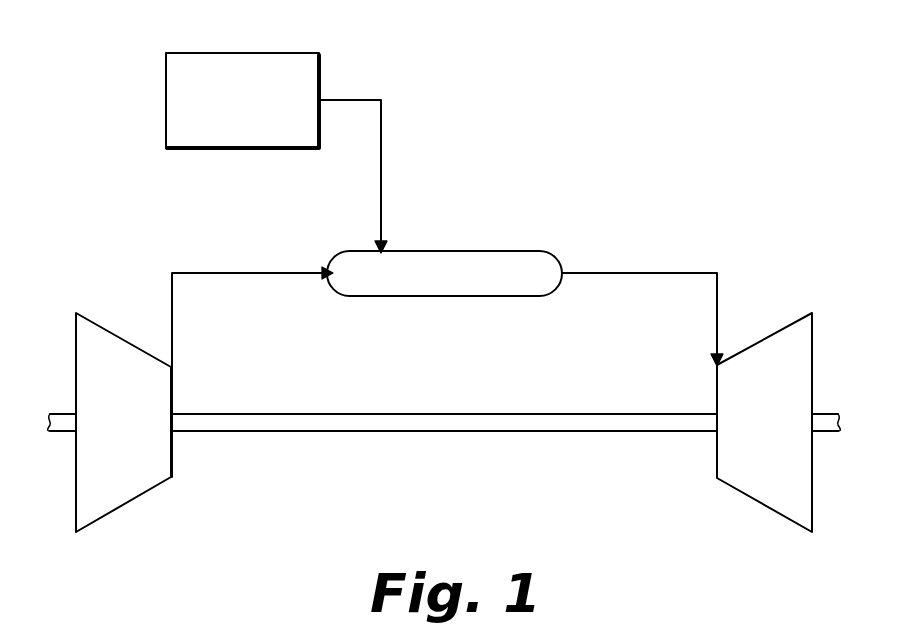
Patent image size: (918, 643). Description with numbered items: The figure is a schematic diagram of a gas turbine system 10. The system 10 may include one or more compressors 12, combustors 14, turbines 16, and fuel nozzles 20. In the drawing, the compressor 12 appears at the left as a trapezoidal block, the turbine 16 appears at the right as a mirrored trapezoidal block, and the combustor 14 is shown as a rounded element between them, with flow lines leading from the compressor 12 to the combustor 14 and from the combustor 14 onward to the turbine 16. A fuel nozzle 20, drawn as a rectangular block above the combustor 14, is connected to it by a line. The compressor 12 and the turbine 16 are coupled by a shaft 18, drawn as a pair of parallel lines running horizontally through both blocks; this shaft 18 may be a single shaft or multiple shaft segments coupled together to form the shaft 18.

The gas turbine system 10 is at (698, 190).
The compressor 12 is at (125, 508).
The combustor 14 is at (443, 251).
The turbine 16 is at (812, 333).
The shaft 18 is at (445, 432).
The fuel nozzle 20 is at (318, 53).